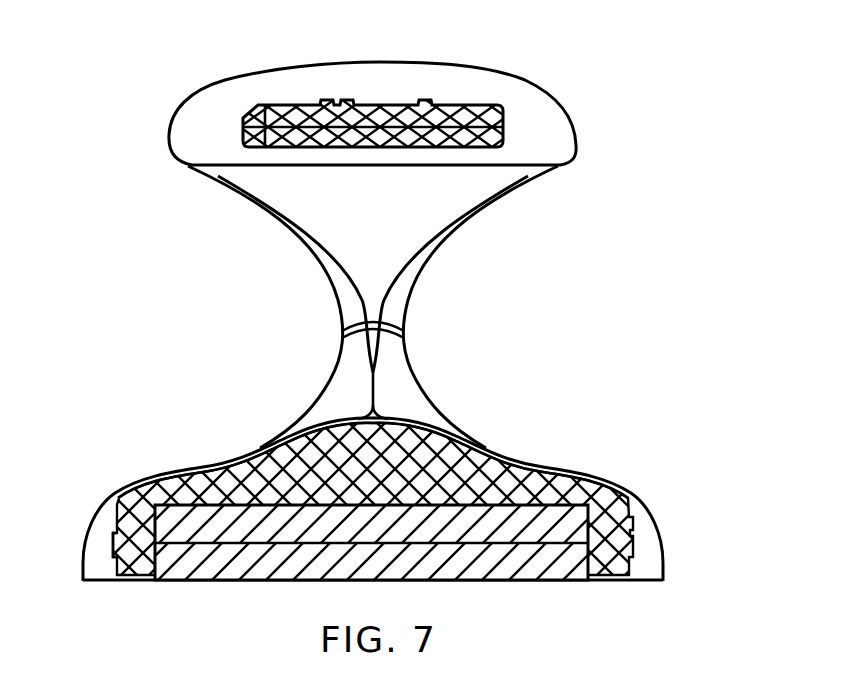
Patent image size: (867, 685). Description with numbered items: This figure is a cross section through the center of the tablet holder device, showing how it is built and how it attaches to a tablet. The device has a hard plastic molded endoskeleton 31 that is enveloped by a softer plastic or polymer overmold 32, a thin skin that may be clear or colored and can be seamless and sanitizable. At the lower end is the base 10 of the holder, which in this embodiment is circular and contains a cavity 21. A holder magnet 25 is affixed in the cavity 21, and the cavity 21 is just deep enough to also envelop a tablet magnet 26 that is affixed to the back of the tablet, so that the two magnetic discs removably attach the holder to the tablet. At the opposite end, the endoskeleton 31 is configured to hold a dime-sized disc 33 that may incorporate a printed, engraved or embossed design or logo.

The base 10 is at (133, 582).
The cavity 21 is at (133, 534).
The holder magnet 25 is at (556, 478).
The tablet magnet 26 is at (457, 570).
The endoskeleton 31 is at (491, 123).
The overmold 32 is at (550, 140).
The disc 33 is at (378, 106).